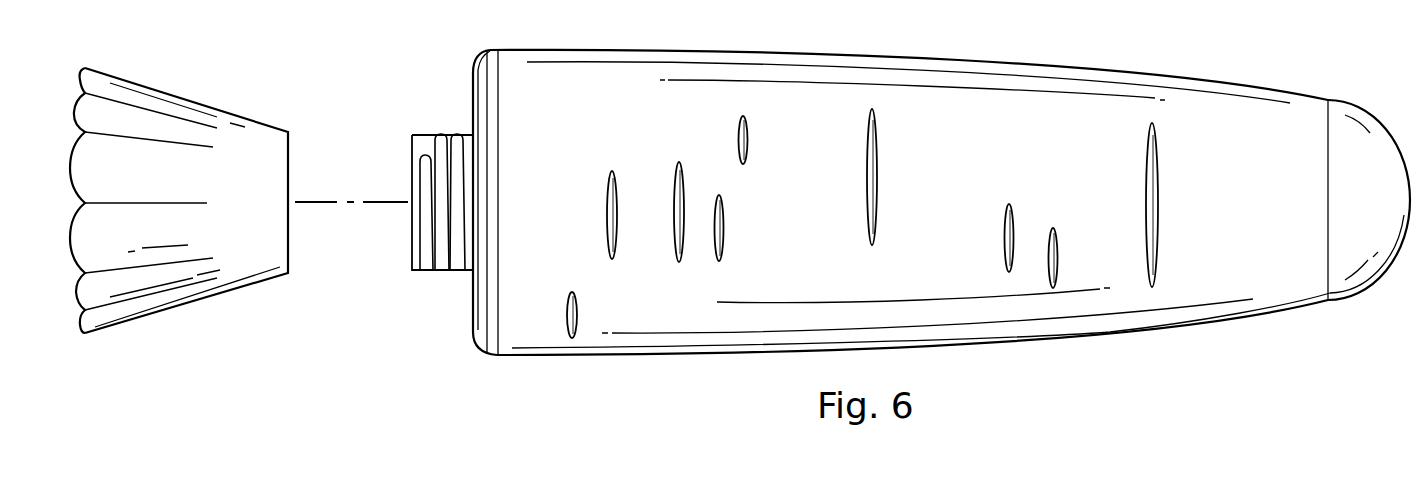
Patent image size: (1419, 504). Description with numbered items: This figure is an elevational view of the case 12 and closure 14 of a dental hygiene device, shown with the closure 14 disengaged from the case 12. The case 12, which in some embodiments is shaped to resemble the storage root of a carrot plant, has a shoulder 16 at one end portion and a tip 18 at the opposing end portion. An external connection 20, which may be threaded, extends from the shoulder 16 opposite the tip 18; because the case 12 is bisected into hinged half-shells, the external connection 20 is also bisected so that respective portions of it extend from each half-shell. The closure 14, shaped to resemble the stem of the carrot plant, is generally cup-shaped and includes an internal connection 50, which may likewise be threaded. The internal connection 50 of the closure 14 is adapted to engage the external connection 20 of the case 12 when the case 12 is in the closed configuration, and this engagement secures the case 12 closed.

The case 12 is at (983, 62).
The closure 14 is at (188, 99).
The shoulder 16 is at (472, 100).
The tip 18 is at (1260, 85).
The external connection 20 is at (408, 227).
The internal connection 50 is at (292, 170).